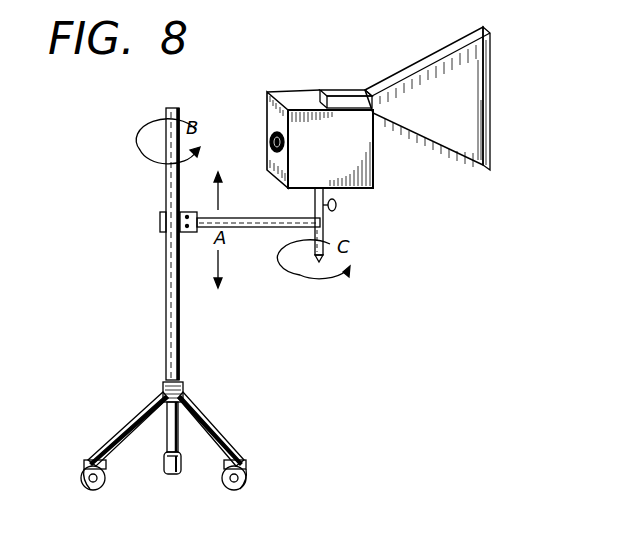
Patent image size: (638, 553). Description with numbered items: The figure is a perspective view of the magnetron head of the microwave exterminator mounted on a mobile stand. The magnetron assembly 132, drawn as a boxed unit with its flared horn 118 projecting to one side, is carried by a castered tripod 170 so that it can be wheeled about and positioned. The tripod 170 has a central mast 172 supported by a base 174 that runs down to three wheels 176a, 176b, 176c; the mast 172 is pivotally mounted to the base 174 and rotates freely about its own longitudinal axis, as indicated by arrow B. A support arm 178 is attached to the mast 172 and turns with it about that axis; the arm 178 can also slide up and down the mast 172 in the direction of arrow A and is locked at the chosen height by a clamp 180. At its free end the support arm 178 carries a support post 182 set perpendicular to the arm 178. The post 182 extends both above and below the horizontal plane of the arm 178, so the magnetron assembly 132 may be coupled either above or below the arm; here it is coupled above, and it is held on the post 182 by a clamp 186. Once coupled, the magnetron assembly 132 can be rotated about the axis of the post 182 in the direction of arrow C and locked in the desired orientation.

The horn antenna 118 is at (492, 73).
The magnetron assembly 132 is at (392, 183).
The castered tripod 170 is at (153, 278).
The central mast 172 is at (180, 327).
The base 174 is at (225, 432).
The wheel 176a is at (93, 490).
The wheel 176b is at (174, 478).
The wheel 176c is at (233, 490).
The support arm 178 is at (263, 228).
The clamp 180 is at (160, 222).
The support post 182 is at (320, 268).
The clamp 186 is at (338, 205).